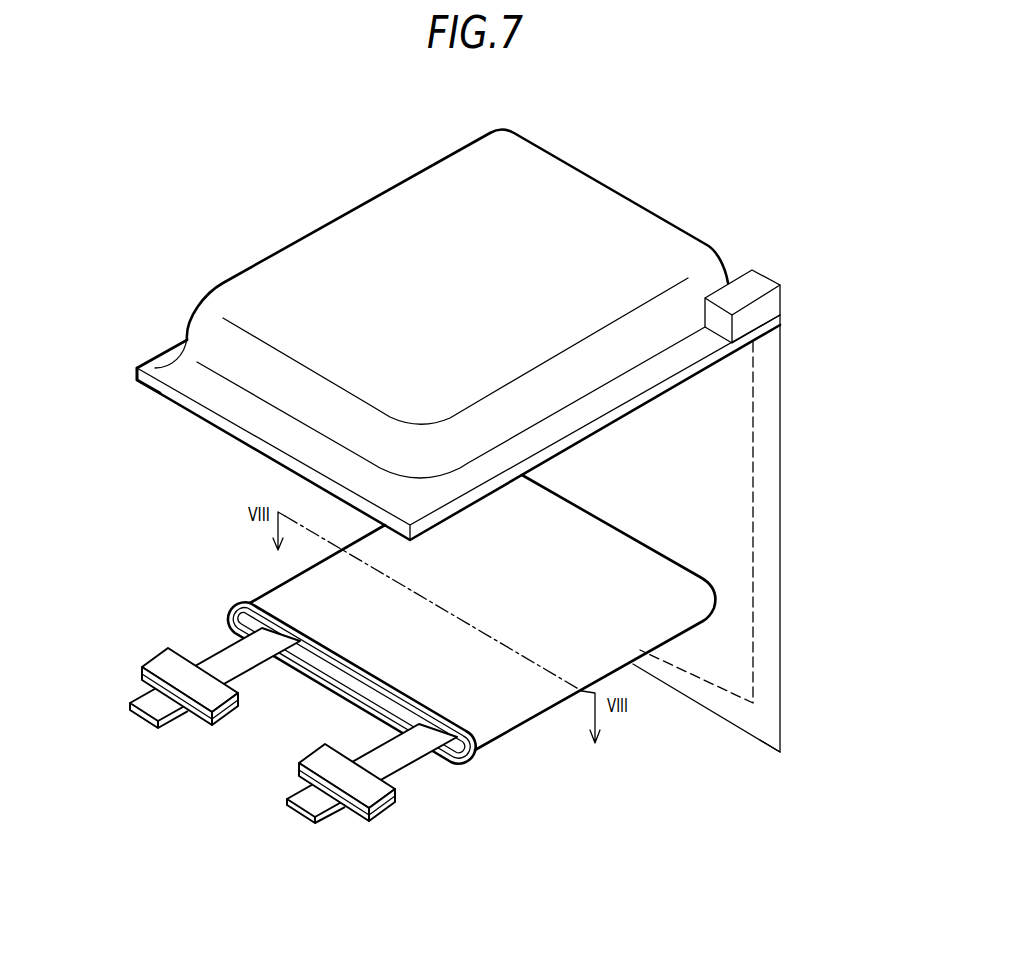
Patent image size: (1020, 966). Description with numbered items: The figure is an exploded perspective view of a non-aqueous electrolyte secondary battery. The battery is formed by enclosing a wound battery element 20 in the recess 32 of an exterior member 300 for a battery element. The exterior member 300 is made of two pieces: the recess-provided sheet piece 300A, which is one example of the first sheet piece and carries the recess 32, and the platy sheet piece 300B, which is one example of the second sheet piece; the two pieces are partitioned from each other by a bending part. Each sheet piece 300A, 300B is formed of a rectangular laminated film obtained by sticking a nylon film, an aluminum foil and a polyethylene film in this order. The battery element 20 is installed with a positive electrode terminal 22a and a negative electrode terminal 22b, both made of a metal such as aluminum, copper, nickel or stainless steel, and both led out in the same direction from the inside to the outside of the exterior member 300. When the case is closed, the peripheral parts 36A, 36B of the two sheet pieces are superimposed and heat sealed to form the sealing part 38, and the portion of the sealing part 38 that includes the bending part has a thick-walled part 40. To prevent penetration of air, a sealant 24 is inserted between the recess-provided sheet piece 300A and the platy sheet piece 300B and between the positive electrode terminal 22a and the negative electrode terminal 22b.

The wound battery element 20 is at (555, 527).
The positive electrode terminal 22a is at (143, 697).
The negative electrode terminal 22b is at (302, 792).
The sealant 24 is at (322, 748).
The recess 32 is at (593, 207).
The peripheral part of the recess-provided sheet piece 36A is at (155, 361).
The peripheral part of the platy sheet piece 36B is at (775, 729).
The sealing part 38 is at (625, 388).
The thick-walled part 40 is at (757, 287).
The exterior member for a battery element 300 is at (782, 627).
The recess-provided sheet piece 300A is at (223, 283).
The platy sheet piece 300B is at (781, 530).